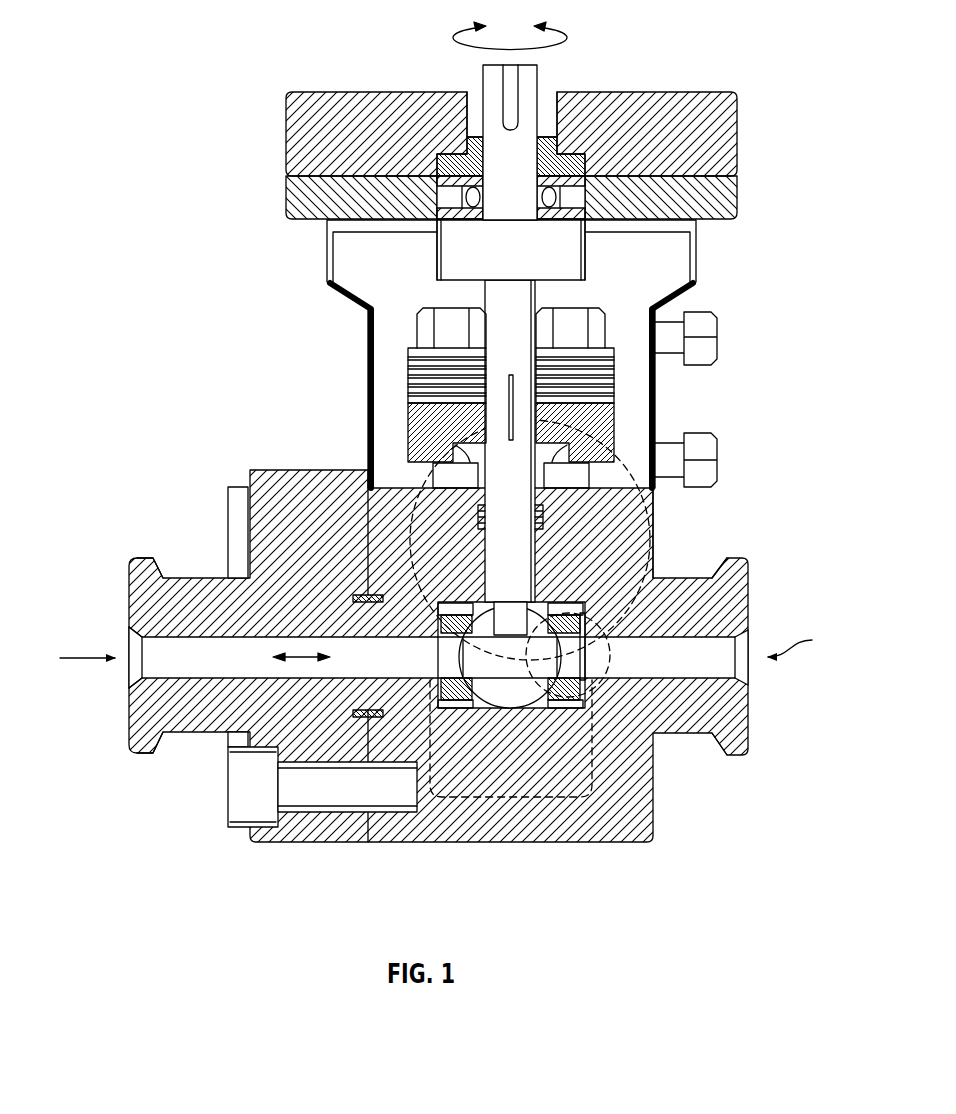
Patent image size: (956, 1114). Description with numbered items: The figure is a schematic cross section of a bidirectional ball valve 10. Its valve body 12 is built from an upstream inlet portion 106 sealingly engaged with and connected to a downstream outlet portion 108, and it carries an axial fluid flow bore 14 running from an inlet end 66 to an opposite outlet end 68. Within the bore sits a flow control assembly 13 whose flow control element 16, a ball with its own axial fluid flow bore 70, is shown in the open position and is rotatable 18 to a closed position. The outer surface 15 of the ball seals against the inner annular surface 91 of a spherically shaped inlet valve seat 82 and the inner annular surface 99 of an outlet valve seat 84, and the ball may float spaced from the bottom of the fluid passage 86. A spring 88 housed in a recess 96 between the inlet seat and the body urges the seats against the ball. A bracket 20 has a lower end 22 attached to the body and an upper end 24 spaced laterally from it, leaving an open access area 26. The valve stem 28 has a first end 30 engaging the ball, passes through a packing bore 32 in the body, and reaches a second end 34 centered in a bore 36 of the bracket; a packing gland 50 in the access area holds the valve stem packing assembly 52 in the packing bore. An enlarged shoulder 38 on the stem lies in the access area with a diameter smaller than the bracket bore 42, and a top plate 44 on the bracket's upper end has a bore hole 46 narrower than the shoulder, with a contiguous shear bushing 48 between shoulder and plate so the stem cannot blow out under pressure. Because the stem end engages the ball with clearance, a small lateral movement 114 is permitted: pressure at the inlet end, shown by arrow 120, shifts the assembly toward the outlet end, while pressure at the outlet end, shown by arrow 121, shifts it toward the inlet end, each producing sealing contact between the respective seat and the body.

The bidirectional ball valve 10 is at (699, 65).
The valve body 12 is at (572, 843).
The flow control assembly 13 is at (501, 797).
The axial fluid flow bore 14 is at (124, 645).
The outer surface 15 is at (528, 708).
The flow control element 16 is at (540, 706).
The rotation of the flow control element 18 is at (478, 30).
The bracket 20 is at (700, 258).
The lower end of bracket 22 is at (368, 468).
The upper end of bracket 24 is at (288, 198).
The open access area 26 is at (642, 281).
The valve stem 28 is at (547, 73).
The first end of valve stem 30 is at (523, 577).
The packing bore 32 is at (546, 516).
The second end of valve stem 34 is at (483, 70).
The bore in bracket 36 is at (437, 212).
The shoulder 38 is at (450, 262).
The bracket bore 42 is at (438, 252).
The top plate 44 is at (287, 135).
The bore hole 46 is at (469, 90).
The shear bushing 48 is at (440, 165).
The packing gland 50 is at (452, 460).
The valve stem packing assembly 52 is at (476, 516).
The inlet end 66 is at (748, 705).
The outlet end 68 is at (128, 605).
The axial fluid flow bore of ball 70 is at (523, 667).
The inlet valve seat 82 is at (538, 690).
The outlet valve seat 84 is at (440, 610).
The bottom of the fluid passage 86 is at (512, 708).
The spring 88 is at (588, 692).
The inner annular surface of inlet valve seat 91 is at (590, 712).
The recess 96 is at (567, 615).
The inner annular surface of outlet valve seat 99 is at (445, 680).
The inlet portion 106 is at (432, 843).
The outlet portion 108 is at (312, 843).
The lateral movement 114 is at (307, 648).
The arrow representing pressure applied to inlet end 120 is at (809, 642).
The arrow representing pressure applied to outlet end 121 is at (95, 658).